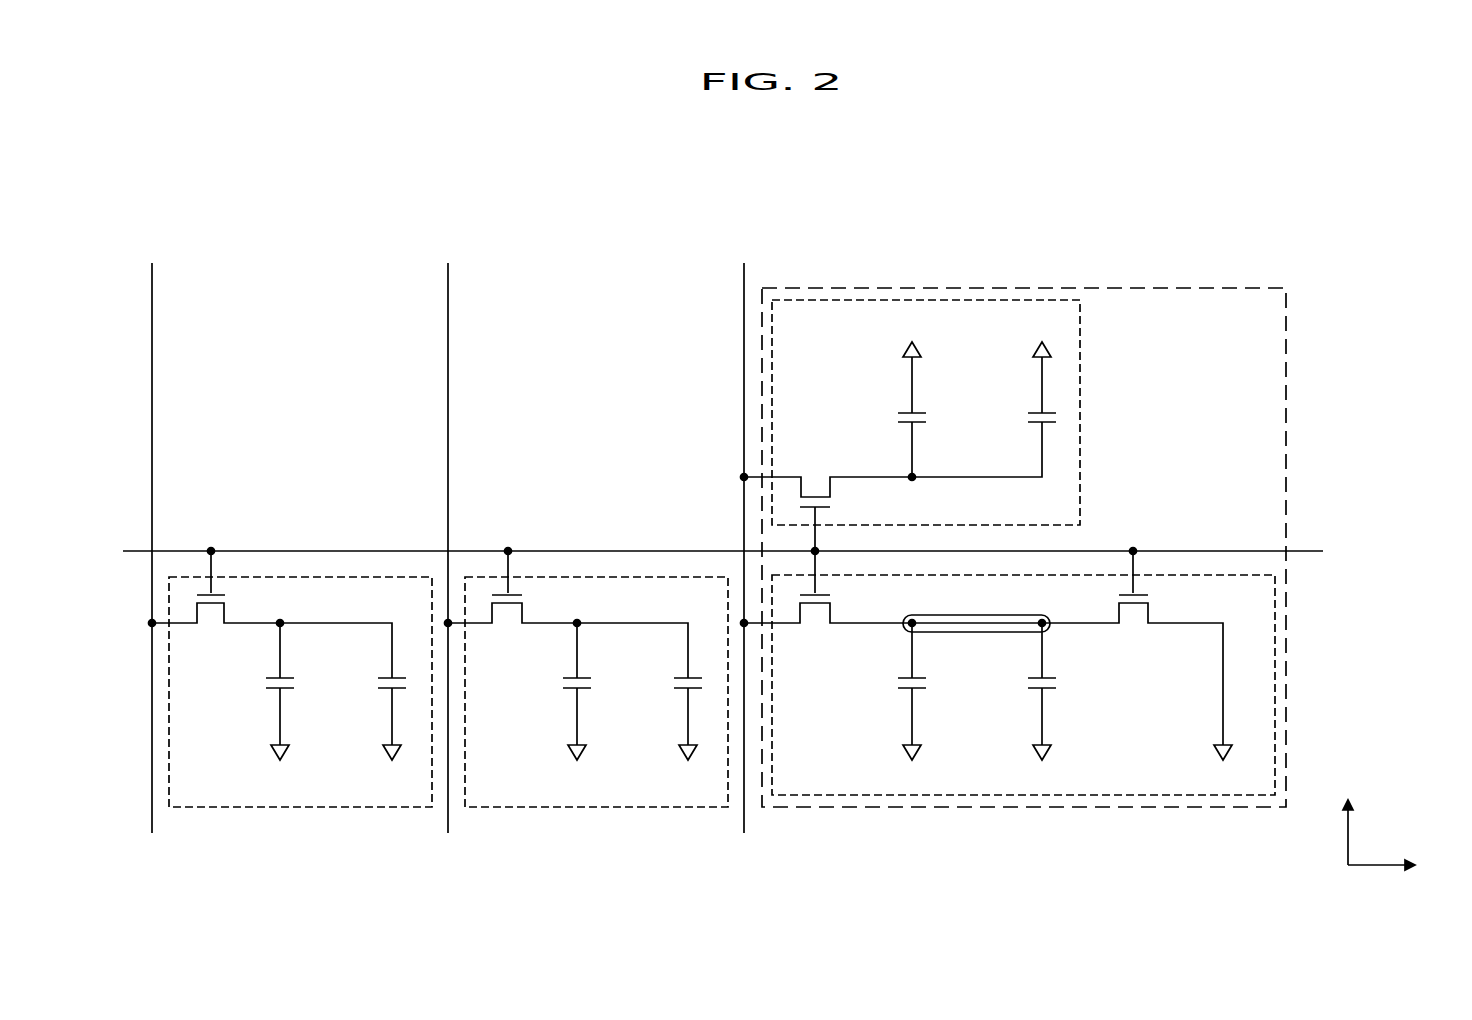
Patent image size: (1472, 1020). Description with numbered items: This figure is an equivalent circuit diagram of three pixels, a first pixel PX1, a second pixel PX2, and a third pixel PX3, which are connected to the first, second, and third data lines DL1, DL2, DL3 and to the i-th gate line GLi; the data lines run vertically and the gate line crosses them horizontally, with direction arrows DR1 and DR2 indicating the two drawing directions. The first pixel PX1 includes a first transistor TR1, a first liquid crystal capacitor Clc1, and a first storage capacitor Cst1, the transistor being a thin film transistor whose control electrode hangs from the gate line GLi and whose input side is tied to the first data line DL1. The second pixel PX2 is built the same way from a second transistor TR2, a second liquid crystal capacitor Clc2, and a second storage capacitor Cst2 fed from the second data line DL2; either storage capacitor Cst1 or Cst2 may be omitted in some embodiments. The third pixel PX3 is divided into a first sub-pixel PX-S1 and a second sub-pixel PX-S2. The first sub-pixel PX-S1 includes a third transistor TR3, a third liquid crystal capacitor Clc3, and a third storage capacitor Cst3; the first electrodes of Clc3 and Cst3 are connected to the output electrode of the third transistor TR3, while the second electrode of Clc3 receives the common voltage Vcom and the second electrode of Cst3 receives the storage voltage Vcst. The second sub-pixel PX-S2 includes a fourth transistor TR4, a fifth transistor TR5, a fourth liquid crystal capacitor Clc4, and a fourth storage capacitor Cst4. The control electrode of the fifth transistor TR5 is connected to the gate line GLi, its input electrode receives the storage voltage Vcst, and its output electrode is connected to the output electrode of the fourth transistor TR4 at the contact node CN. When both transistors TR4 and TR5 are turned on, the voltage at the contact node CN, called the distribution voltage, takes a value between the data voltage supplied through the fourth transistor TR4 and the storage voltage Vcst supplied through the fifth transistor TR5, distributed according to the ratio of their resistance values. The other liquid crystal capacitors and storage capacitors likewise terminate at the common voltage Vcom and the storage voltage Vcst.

The i-th gate line GLi is at (702, 551).
The first data line DL1 is at (151, 533).
The second data line DL2 is at (447, 533).
The third data line DL3 is at (744, 533).
The first pixel PX1 is at (343, 807).
The second pixel PX2 is at (638, 807).
The third pixel PX3 is at (1158, 807).
The first sub-pixel PX-S1 is at (1080, 405).
The second sub-pixel PX-S2 is at (1286, 687).
The first transistor TR1 is at (236, 610).
The second transistor TR2 is at (532, 610).
The third transistor TR3 is at (840, 492).
The fourth transistor TR4 is at (840, 608).
The fifth transistor TR5 is at (1156, 604).
The first liquid crystal capacitor Clc1 is at (251, 683).
The second liquid crystal capacitor Clc2 is at (547, 683).
The third liquid crystal capacitor Clc3 is at (882, 419).
The fourth liquid crystal capacitor Clc4 is at (882, 683).
The first storage capacitor Cst1 is at (343, 684).
The second storage capacitor Cst2 is at (639, 684).
The third storage capacitor Cst3 is at (984, 417).
The fourth storage capacitor Cst4 is at (1012, 683).
The contact node CN is at (976, 611).
The common voltage Vcom is at (596, 555).
The storage voltage Vcst is at (808, 555).
The first direction DR1 is at (1402, 865).
The second direction DR2 is at (1348, 817).